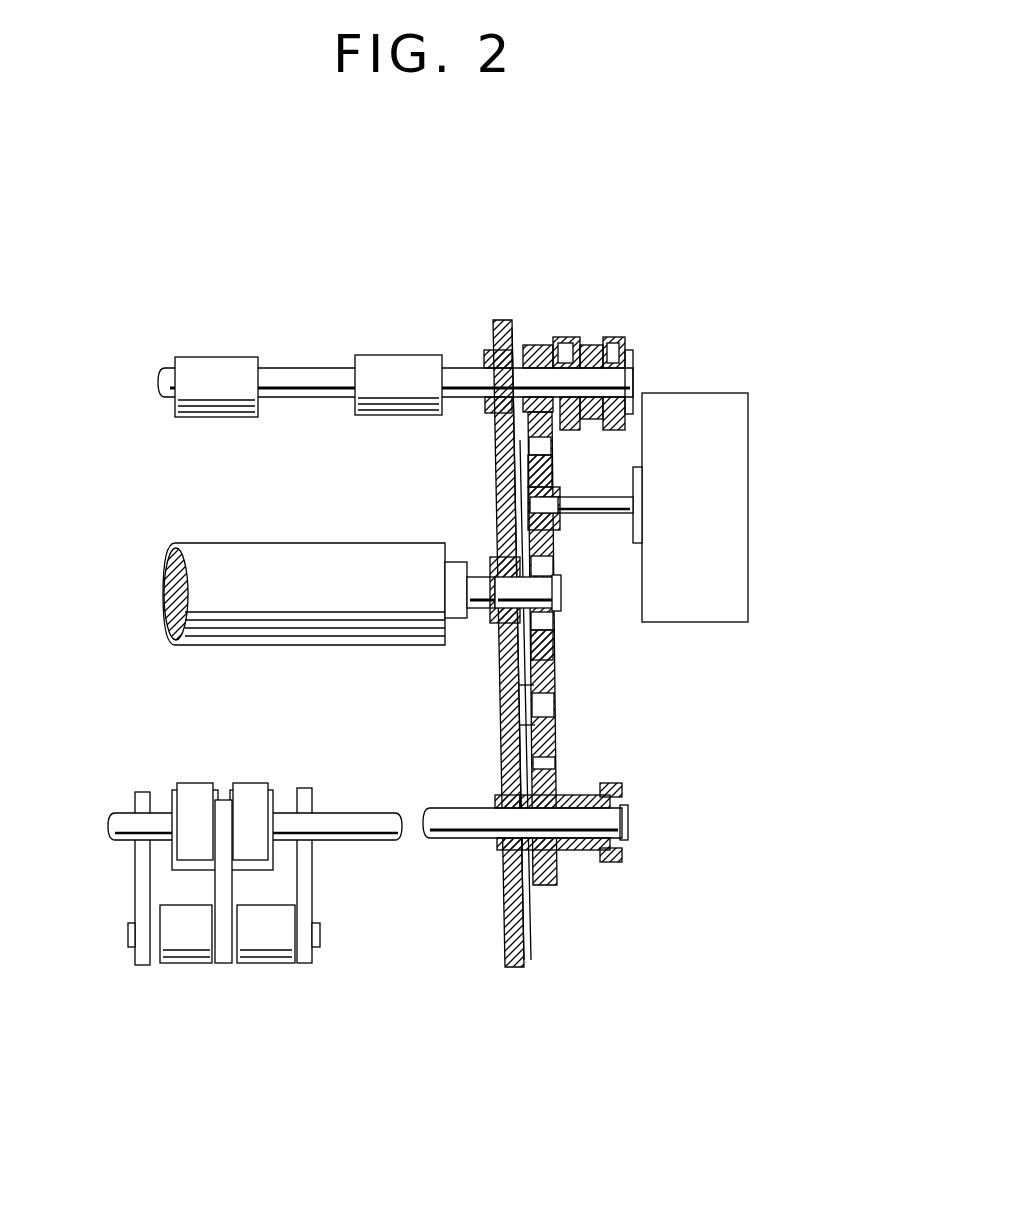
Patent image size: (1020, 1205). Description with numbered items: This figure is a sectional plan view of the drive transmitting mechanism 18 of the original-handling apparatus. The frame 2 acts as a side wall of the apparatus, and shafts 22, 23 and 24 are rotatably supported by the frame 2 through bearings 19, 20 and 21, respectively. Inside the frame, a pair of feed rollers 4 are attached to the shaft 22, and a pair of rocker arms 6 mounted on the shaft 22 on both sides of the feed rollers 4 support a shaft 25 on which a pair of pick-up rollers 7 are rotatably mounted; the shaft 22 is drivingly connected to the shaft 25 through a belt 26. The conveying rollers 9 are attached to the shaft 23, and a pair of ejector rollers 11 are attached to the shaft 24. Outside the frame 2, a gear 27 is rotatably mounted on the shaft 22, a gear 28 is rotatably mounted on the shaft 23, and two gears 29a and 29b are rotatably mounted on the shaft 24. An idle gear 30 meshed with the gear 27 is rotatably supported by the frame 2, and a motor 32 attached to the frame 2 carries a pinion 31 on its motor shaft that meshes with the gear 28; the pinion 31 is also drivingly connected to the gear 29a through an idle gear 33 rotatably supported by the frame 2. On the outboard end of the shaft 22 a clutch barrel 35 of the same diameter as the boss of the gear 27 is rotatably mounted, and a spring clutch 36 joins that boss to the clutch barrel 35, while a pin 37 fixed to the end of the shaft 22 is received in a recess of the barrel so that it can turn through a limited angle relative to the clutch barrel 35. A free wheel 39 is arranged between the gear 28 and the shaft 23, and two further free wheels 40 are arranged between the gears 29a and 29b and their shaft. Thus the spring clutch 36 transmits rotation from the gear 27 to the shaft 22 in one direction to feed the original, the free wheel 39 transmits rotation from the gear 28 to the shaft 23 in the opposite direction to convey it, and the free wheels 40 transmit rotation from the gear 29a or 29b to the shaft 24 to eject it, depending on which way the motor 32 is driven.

The frame 2 is at (530, 944).
The feed rollers 4 is at (255, 783).
The rocker arms 6 is at (305, 790).
The pick-up rollers 7 is at (272, 967).
The conveying rollers 9 is at (333, 543).
The ejector rollers 11 is at (235, 357).
The drive transmitting mechanism 18 is at (608, 240).
The bearing 19 is at (500, 802).
The bearing 20 is at (488, 560).
The bearing 21 is at (488, 352).
The shaft 22 is at (452, 842).
The shaft 23 is at (478, 617).
The shaft 24 is at (308, 372).
The shaft 25 is at (322, 932).
The belt 26 is at (225, 967).
The gear 27 is at (557, 770).
The gear 28 is at (555, 637).
The gear 29a is at (538, 345).
The gear 29b is at (600, 345).
The idle gear 30 is at (552, 682).
The pinion 31 is at (562, 532).
The motor 32 is at (750, 492).
The idle gear 33 is at (552, 472).
The clutch barrel 35 is at (625, 802).
The spring clutch 36 is at (590, 797).
The pin 37 is at (622, 857).
The free wheel 39 is at (565, 592).
The free wheels 40 is at (570, 345).